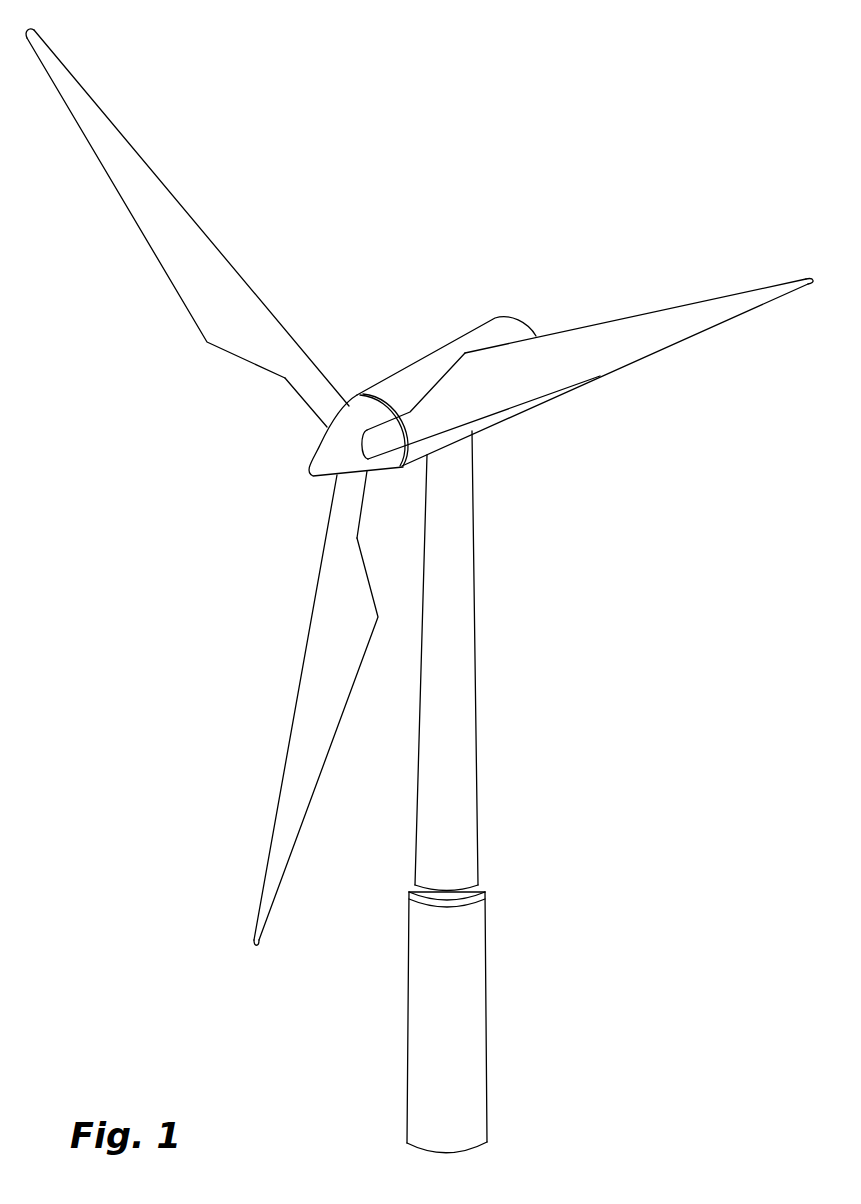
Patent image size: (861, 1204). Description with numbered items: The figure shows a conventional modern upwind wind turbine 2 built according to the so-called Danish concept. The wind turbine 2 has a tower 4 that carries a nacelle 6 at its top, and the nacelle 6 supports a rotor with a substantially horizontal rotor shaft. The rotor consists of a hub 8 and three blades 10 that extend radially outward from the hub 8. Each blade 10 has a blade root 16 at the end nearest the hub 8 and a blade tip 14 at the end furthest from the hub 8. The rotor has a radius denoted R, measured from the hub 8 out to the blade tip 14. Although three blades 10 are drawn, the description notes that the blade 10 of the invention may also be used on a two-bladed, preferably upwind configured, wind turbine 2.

The wind turbine 2 is at (576, 736).
The tower 4 is at (463, 662).
The nacelle 6 is at (413, 375).
The hub 8 is at (325, 457).
The blade 10 is at (218, 313).
The blade tip 14 is at (68, 82).
The blade root 16 is at (336, 408).